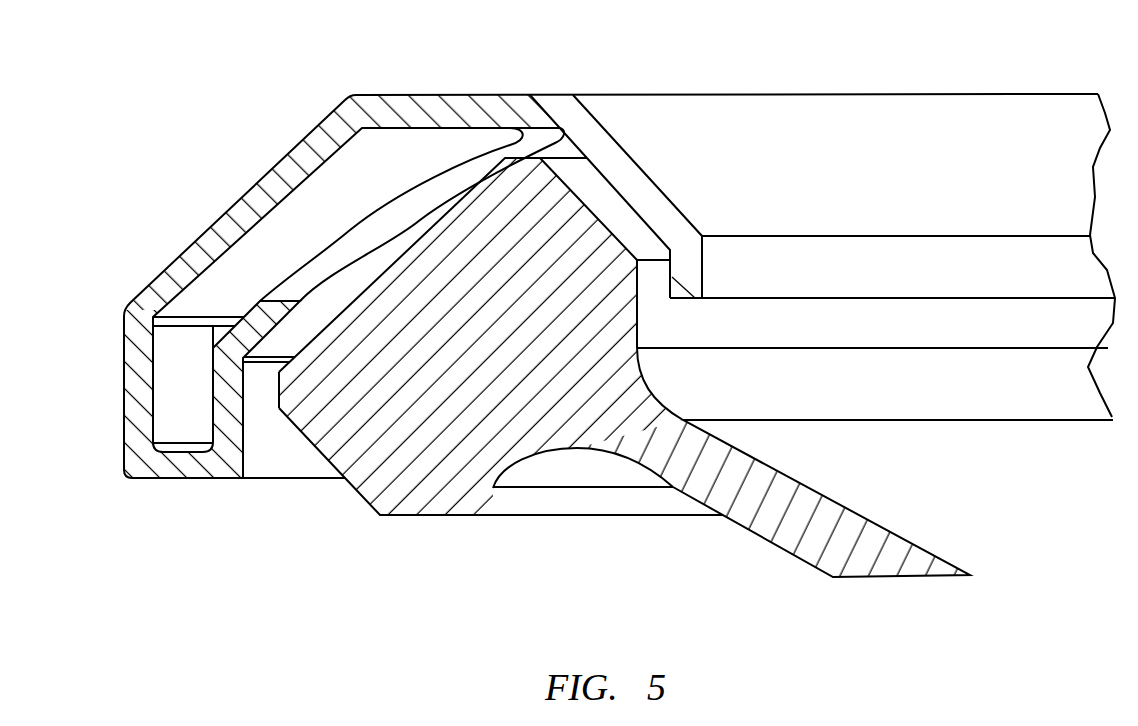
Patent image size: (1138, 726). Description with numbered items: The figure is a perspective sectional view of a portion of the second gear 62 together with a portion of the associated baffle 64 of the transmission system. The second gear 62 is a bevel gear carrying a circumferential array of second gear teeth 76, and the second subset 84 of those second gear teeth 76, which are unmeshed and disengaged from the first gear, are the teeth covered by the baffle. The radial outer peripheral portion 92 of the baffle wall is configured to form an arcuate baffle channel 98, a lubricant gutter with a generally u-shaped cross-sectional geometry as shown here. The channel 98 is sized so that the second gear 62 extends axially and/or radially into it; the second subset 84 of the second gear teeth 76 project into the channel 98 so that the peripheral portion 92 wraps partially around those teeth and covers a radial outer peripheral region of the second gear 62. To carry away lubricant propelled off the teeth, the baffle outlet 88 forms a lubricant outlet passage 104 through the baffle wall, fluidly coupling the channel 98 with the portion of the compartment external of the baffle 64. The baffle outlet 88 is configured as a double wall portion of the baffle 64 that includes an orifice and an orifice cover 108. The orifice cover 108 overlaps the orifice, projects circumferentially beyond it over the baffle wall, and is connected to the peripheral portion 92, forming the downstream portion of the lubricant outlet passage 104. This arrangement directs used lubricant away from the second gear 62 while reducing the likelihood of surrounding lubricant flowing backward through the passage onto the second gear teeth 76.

The second gear 62 is at (790, 552).
The baffle 64 is at (766, 92).
The second gear teeth 76 is at (300, 432).
The second subset of the second gear teeth 84 is at (316, 467).
The baffle outlet 88 is at (288, 150).
The radial outer peripheral portion 92 is at (883, 93).
The baffle channel 98 is at (262, 403).
The lubricant outlet passage 104 is at (176, 394).
The orifice cover 108 is at (202, 237).